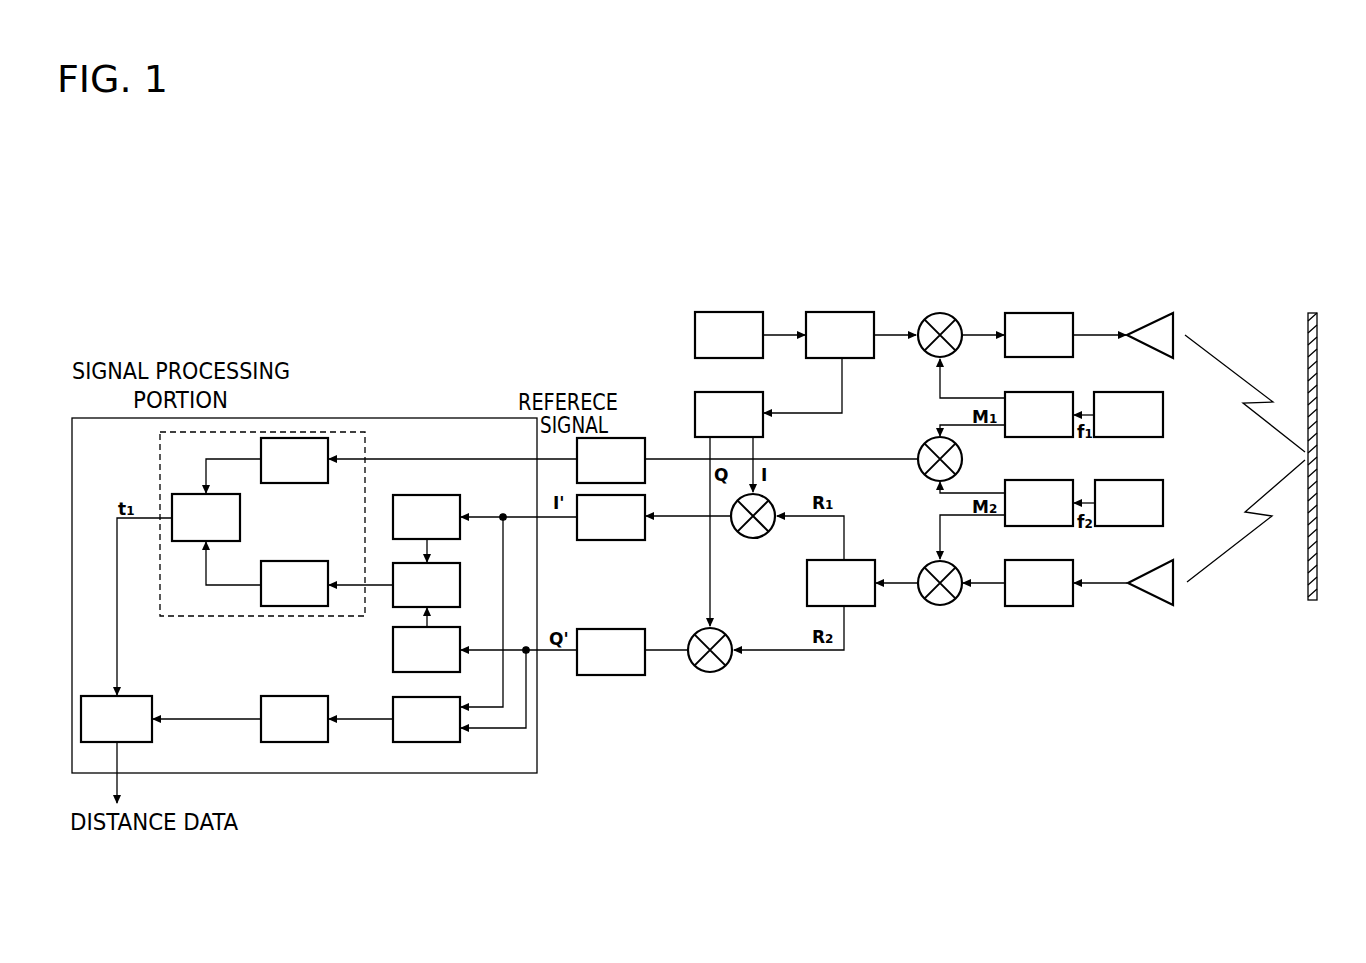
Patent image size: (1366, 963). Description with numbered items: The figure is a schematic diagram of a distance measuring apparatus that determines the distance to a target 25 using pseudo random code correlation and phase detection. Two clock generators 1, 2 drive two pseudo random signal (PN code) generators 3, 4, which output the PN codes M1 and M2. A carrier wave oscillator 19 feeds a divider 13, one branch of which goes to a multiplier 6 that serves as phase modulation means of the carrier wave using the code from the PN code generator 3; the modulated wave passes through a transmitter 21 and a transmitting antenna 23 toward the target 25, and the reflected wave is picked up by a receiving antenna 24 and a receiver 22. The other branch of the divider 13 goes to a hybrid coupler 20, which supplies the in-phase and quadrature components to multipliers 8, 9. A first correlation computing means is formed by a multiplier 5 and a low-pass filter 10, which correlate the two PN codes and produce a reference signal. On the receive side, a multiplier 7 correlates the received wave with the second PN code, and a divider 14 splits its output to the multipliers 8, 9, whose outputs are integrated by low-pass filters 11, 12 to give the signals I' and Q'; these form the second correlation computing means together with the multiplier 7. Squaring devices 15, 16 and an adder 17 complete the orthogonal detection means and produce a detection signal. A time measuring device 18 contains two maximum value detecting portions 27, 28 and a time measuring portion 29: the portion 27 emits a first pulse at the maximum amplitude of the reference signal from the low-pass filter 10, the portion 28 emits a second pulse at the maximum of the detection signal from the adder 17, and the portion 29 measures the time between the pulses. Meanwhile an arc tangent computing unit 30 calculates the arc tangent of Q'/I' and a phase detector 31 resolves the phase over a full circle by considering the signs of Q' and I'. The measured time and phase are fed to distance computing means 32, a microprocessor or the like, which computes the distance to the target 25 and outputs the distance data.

The clock generator 1 is at (1163, 415).
The clock generator 2 is at (1163, 503).
The pseudo random signal (PN code) generator 3 is at (1040, 392).
The pseudo random signal (PN code) generator 4 is at (1045, 480).
The multiplier (mixer) 5 is at (926, 442).
The multiplier (mixer) 6 is at (958, 320).
The multiplier (mixer) 7 is at (926, 600).
The multiplier (mixer) 8 is at (771, 502).
The multiplier (mixer) 9 is at (731, 664).
The low-pass filter 10 is at (620, 438).
The low-pass filter 11 is at (645, 505).
The low-pass filter 12 is at (630, 629).
The divider 13 is at (838, 312).
The divider 14 is at (862, 560).
The squaring device 15 is at (450, 495).
The squaring device 16 is at (393, 655).
The adder 17 is at (460, 585).
The time measuring device 18 is at (290, 432).
The carrier wave oscillator 19 is at (727, 312).
The hybrid coupler 20 is at (748, 392).
The transmitter 21 is at (1040, 313).
The receiver 22 is at (1040, 606).
The transmitting antenna 23 is at (1158, 315).
The receiving antenna 24 is at (1150, 605).
The target 25 is at (1317, 398).
The maximum value detecting portion 27 is at (315, 483).
The maximum value detecting portion 28 is at (290, 561).
The time measuring portion 29 is at (240, 510).
The arc tangent computing unit 30 is at (455, 742).
The phase detector 31 is at (290, 696).
The distance computing means 32 is at (140, 696).